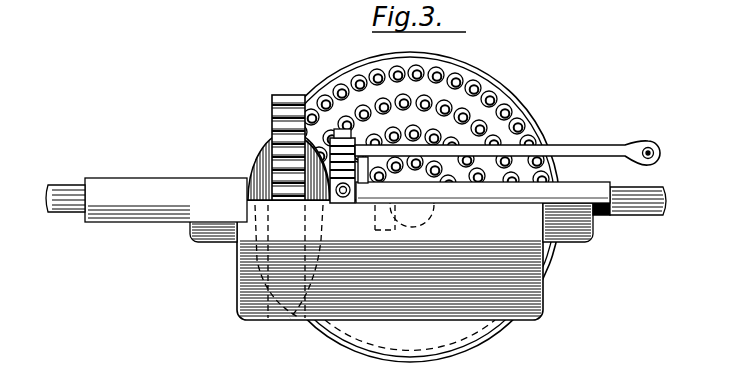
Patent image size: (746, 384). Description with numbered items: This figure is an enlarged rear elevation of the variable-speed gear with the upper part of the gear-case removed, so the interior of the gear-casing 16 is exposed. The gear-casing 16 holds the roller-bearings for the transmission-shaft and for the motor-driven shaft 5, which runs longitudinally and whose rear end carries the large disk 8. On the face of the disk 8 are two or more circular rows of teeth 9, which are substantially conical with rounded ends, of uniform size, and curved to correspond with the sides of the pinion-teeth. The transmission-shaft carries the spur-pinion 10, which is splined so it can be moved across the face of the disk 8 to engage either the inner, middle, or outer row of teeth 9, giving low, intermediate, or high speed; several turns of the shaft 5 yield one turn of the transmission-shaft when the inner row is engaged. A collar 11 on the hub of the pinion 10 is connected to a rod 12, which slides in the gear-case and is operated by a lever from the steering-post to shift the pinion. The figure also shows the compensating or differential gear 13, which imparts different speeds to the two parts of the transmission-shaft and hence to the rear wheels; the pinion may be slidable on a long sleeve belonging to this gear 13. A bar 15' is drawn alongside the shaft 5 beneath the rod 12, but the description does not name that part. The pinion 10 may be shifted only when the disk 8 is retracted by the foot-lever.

The motor-driven shaft 5 is at (668, 206).
The disk 8 is at (510, 104).
The teeth 9 is at (491, 96).
The spur-pinion 10 is at (272, 102).
The collar 11 is at (313, 152).
The rod 12 is at (581, 153).
The compensating gear 13 is at (262, 157).
The bar 15' is at (483, 183).
The gear-casing 16 is at (390, 251).